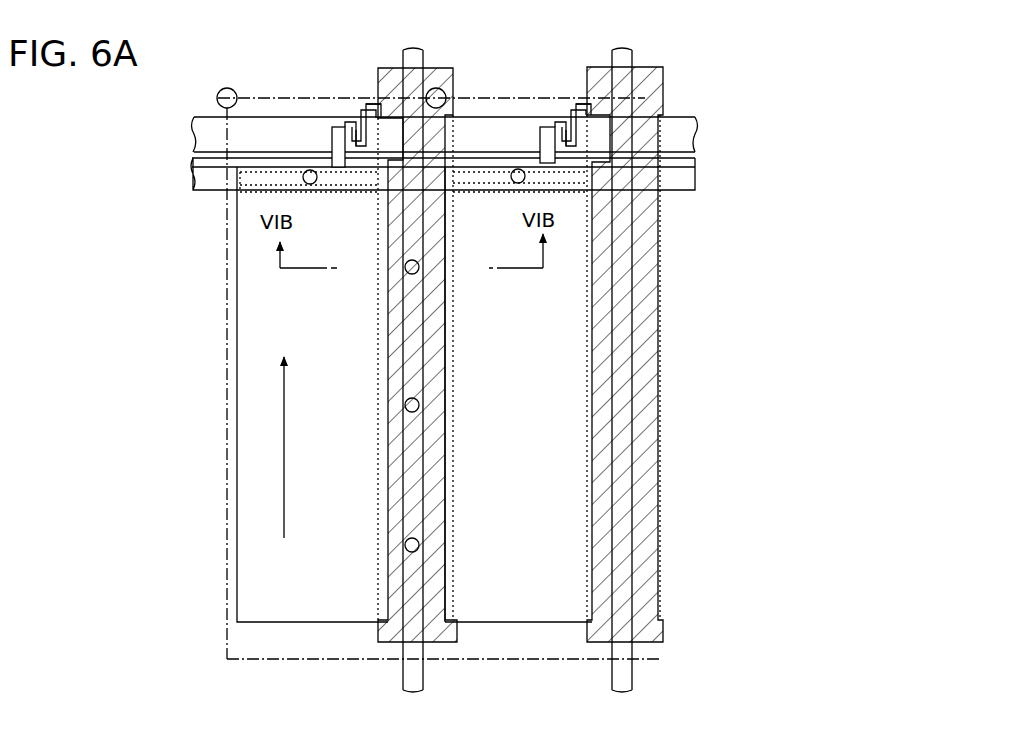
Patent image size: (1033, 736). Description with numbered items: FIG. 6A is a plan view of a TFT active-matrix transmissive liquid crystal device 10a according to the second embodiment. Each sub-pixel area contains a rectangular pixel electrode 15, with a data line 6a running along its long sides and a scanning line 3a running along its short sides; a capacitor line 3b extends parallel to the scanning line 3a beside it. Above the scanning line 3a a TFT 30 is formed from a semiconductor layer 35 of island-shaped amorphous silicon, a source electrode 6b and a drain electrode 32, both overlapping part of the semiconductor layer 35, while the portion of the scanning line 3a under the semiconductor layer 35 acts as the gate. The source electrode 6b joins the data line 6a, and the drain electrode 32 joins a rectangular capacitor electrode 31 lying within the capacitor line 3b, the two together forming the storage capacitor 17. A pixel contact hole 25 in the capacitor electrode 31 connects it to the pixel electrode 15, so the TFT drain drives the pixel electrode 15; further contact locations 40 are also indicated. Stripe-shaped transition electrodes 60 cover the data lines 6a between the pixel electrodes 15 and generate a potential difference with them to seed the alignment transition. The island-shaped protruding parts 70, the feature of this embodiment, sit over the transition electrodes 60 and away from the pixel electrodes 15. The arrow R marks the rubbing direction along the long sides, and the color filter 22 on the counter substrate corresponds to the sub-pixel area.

The liquid crystal display panel 10a is at (702, 90).
The scanning line 3a is at (208, 121).
The capacitor line 3b is at (203, 180).
The capacitor electrode 31 is at (204, 162).
The drain electrode 32 is at (333, 128).
The TFT 30 is at (346, 116).
The semiconductor layer 35 is at (356, 140).
The source electrode 6b is at (366, 106).
The data line 6a is at (424, 683).
The contact hole 40 is at (227, 88).
The transition electrode 60 is at (454, 82).
The protruding part 70 is at (418, 272).
The pixel electrode 15 is at (248, 553).
The storage capacitor 17 is at (228, 184).
The pixel contact hole 25 is at (304, 181).
The color filter 22 is at (360, 661).
The arrow R is at (262, 448).